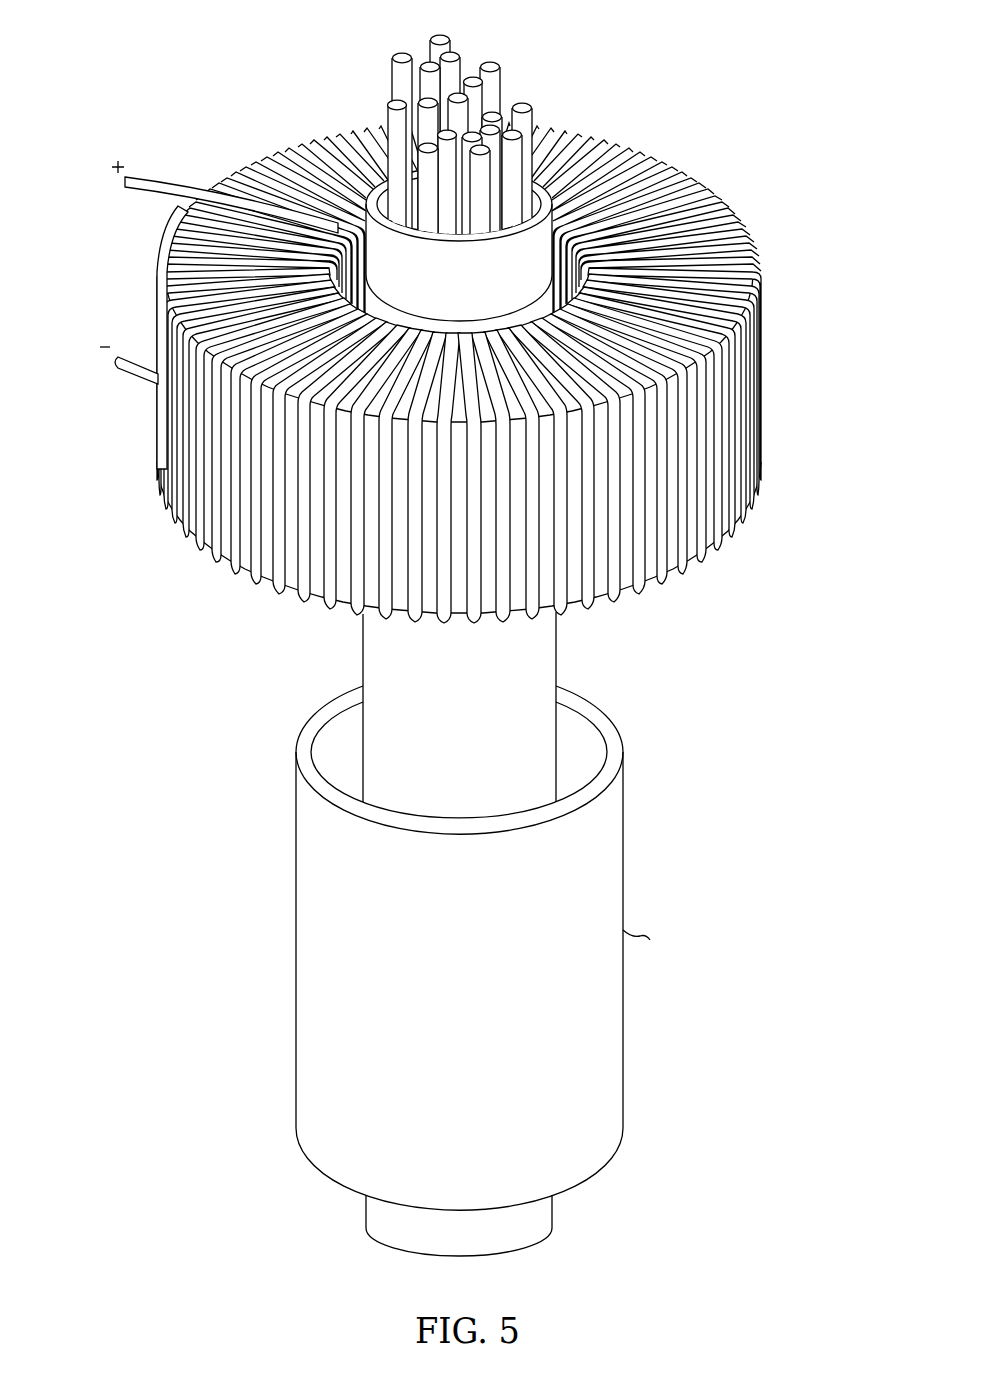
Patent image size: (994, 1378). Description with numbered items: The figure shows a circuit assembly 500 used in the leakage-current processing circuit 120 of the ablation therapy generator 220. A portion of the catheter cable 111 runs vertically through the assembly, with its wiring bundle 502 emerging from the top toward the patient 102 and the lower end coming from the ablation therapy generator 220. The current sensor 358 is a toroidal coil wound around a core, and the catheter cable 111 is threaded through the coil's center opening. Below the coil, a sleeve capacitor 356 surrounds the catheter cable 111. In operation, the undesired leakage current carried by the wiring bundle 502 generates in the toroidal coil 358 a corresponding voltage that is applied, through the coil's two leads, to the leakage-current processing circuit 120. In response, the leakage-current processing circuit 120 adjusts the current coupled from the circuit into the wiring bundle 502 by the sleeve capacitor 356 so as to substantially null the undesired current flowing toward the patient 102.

The circuit assembly 500 is at (434, 637).
The wiring bundle 502 is at (468, 50).
The current sensor 358 is at (758, 373).
The catheter cable 111 is at (382, 652).
The sleeve capacitor 356 is at (318, 1030).
The patient 102 is at (244, 51).
The leakage-current processing circuit 120 is at (408, 569).
The ablation therapy generator 220 is at (734, 1231).